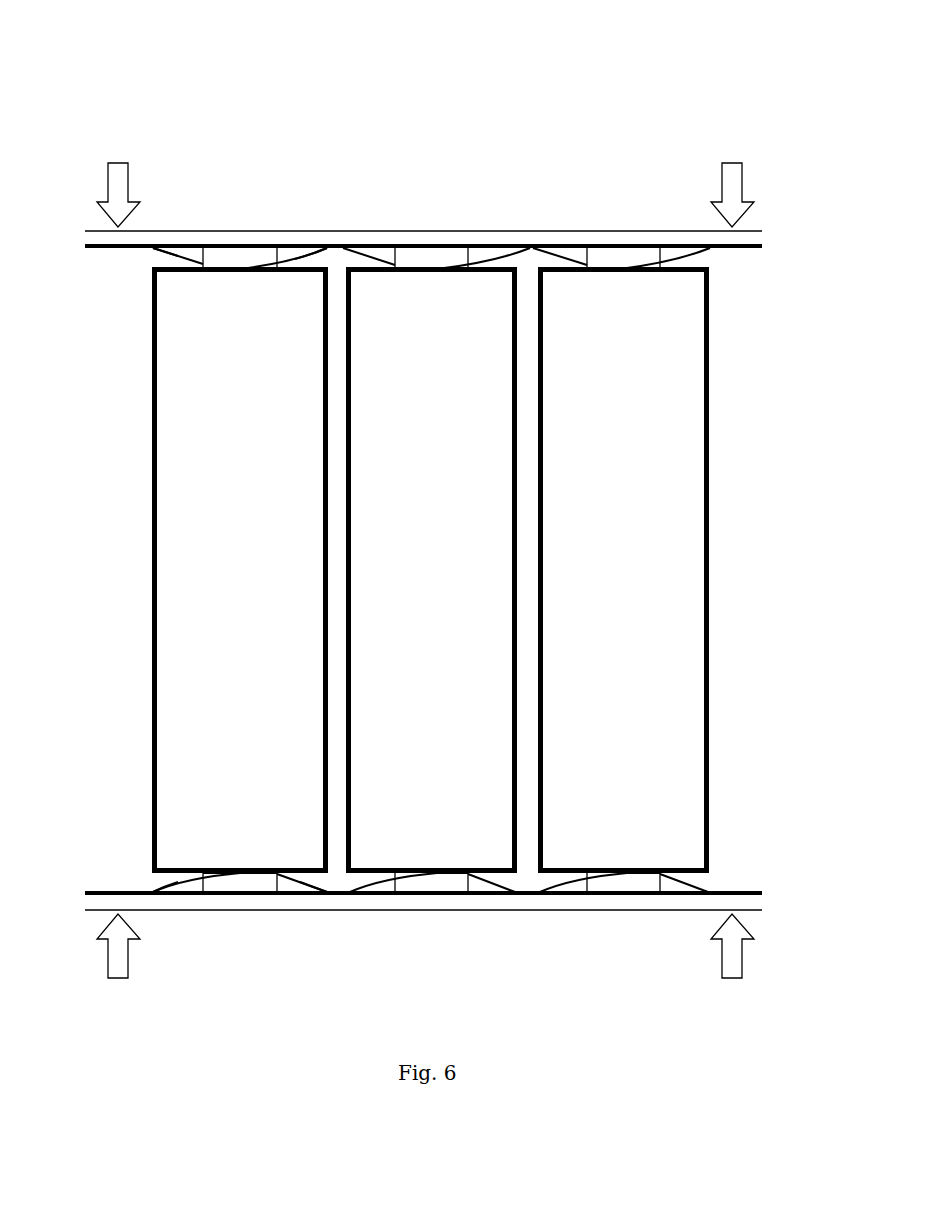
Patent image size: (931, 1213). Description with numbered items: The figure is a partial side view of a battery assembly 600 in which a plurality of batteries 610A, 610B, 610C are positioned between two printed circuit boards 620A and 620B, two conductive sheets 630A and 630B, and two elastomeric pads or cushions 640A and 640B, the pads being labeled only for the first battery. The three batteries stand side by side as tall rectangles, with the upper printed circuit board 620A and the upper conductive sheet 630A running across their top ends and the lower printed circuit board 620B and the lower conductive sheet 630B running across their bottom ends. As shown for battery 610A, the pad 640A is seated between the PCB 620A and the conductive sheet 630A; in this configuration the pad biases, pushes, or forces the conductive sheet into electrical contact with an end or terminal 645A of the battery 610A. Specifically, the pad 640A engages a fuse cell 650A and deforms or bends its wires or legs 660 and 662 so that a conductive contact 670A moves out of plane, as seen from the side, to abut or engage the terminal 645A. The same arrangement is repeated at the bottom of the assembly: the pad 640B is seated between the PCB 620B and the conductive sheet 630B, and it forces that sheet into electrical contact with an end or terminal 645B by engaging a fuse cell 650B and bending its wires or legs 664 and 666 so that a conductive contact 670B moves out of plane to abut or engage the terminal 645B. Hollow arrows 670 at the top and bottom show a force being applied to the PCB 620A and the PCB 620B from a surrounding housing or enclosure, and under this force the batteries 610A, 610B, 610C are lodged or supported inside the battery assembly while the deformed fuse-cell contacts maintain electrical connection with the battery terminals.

The battery assembly 600 is at (280, 56).
The battery 610A is at (278, 532).
The battery 610B is at (472, 532).
The battery 610C is at (665, 532).
The printed circuit board 620A is at (251, 242).
The printed circuit board 620B is at (252, 898).
The conductive sheet 630A is at (237, 258).
The conductive sheet 630B is at (262, 872).
The elastomeric pad 640A is at (262, 255).
The elastomeric pad 640B is at (263, 880).
The end or terminal 645A is at (173, 273).
The end or terminal 645B is at (187, 867).
The fuse cell 650A is at (267, 290).
The fuse cell 650B is at (296, 848).
The wire or leg 660 is at (168, 258).
The wire or leg 662 is at (315, 255).
The wire or leg 664 is at (168, 888).
The wire or leg 666 is at (318, 882).
The arrows 670 is at (118, 175).
The conductive contact 670A is at (232, 272).
The conductive contact 670B is at (247, 867).